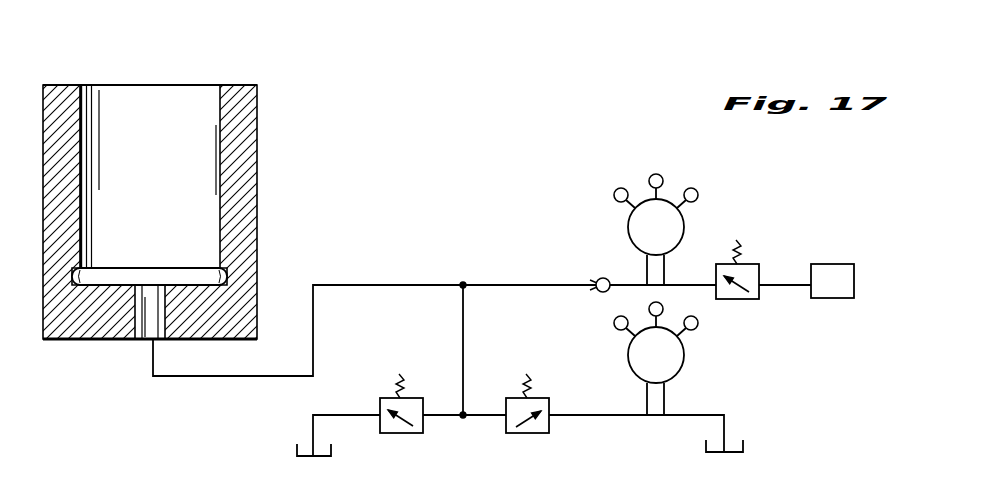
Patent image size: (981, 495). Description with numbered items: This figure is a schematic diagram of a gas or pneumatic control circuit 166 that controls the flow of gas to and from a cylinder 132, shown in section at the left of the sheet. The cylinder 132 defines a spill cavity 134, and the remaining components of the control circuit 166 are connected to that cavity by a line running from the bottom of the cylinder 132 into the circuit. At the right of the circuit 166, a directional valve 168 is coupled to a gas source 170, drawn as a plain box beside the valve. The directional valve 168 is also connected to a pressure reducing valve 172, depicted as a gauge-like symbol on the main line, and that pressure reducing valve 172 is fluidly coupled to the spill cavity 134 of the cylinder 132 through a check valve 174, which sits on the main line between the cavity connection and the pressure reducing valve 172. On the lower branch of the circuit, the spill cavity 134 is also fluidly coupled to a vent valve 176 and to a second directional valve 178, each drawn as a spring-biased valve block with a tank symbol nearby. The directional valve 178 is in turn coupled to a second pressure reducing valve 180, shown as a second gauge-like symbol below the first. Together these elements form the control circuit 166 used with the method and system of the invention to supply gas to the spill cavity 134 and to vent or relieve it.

The cylinder 132 is at (257, 107).
The spill cavity 134 is at (182, 92).
The gas control circuit 166 is at (530, 142).
The directional valve 168 is at (760, 264).
The gas source 170 is at (855, 264).
The pressure reducing valve 172 is at (625, 224).
The check valve 174 is at (597, 280).
The vent valve 176 is at (380, 400).
The directional valve 178 is at (549, 398).
The second pressure reducing valve 180 is at (685, 355).